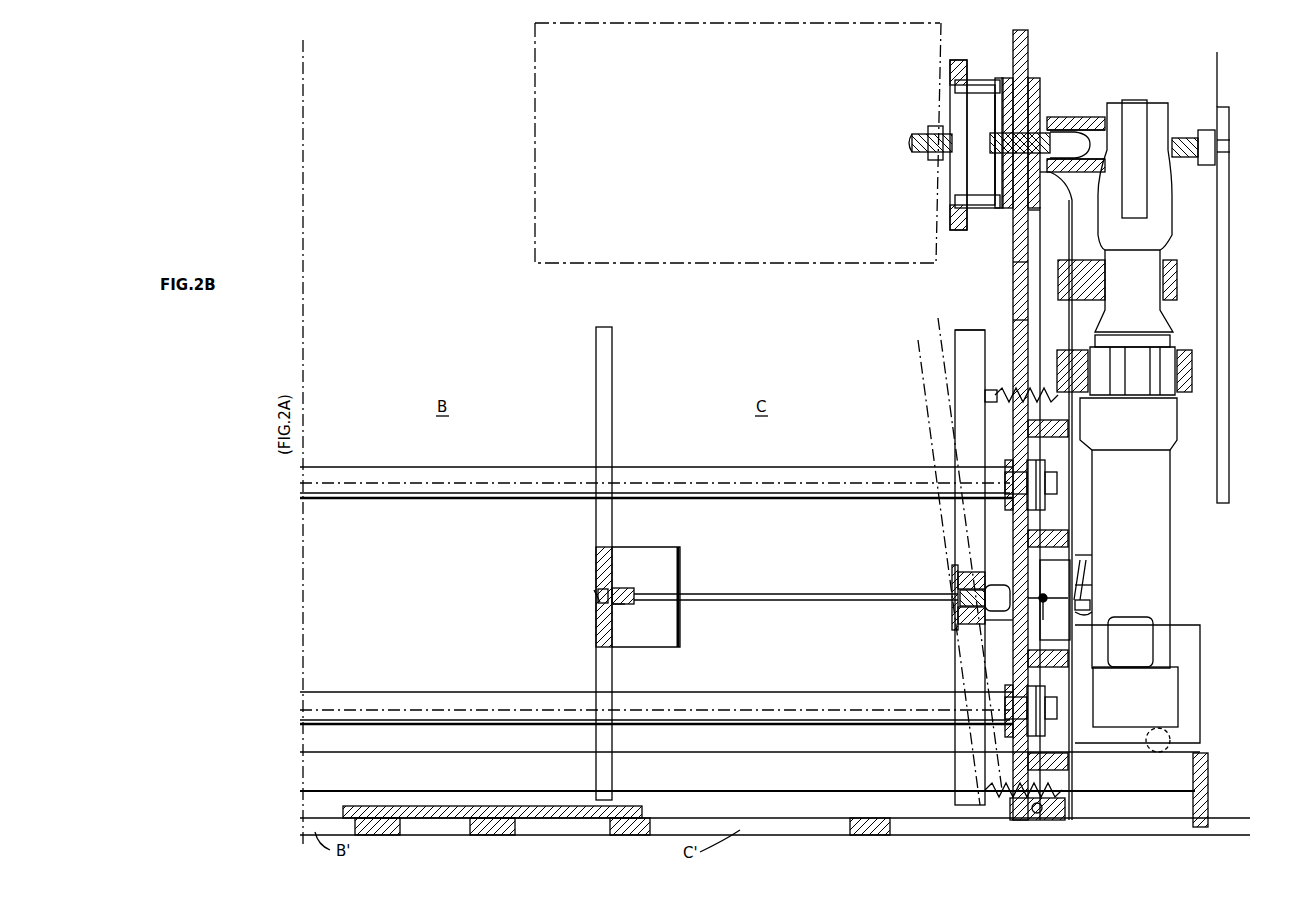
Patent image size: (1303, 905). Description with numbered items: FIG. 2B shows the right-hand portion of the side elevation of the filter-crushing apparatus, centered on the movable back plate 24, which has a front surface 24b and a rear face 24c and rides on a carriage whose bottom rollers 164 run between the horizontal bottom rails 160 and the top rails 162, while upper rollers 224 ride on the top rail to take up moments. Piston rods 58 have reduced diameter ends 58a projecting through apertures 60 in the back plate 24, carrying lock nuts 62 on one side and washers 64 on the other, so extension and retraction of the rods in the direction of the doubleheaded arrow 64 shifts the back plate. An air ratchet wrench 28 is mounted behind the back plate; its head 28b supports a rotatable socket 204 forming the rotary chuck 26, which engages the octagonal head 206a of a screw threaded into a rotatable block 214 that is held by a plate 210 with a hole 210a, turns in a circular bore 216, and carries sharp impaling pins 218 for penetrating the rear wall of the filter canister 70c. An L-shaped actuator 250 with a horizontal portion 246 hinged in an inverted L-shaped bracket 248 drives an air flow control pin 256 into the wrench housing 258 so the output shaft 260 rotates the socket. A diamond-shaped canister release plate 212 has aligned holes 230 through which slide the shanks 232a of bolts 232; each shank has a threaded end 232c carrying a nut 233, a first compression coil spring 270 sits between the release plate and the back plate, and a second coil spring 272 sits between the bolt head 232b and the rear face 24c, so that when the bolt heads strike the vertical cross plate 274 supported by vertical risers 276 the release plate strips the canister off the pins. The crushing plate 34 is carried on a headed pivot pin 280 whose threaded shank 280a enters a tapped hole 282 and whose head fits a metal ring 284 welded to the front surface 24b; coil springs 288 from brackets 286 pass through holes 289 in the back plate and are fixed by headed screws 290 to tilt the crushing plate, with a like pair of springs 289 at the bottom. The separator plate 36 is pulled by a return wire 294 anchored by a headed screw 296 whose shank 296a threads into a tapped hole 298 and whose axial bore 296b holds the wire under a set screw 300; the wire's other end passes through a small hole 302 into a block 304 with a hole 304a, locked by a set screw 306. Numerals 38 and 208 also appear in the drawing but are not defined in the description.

The back plate 24 is at (1028, 35).
The front surface of back plate 24b is at (1030, 290).
The rear face of back plate 24c is at (1015, 266).
The rotary chuck 26 is at (1074, 108).
The air ratchet wrench 28 is at (1150, 232).
The air ratchet wrench head 28b is at (1168, 250).
The crushing plate 34 is at (935, 335).
The separator plate 36 is at (608, 430).
The housing 38 is at (1188, 673).
The piston rods 58 is at (410, 474).
The reduced diameter ends of piston rods 58a is at (1052, 485).
The apertures 60 is at (1005, 505).
The lock nuts 62 is at (1038, 478).
The washers 64 is at (585, 450).
The filter canister 70c is at (535, 75).
The bottom rails 160 is at (1108, 828).
The top rails 162 is at (918, 780).
The bottom rollers 164 is at (1005, 825).
The rotatable socket 204 is at (1100, 117).
The octagonal head 206a is at (1052, 128).
The shaft 208 is at (1000, 160).
The plate 210 is at (1036, 85).
The hole of plate 210a is at (1042, 186).
The canister release plate 212 is at (958, 60).
The rotatable block 214 is at (997, 215).
The circular bore 216 is at (1032, 222).
The impaling pins 218 is at (978, 78).
The upper rollers 224 is at (1162, 752).
The aligned holes 230 is at (937, 108).
The bolts 232 is at (1217, 133).
The bolt shanks 232a is at (1205, 165).
The bolt heads 232b is at (1230, 152).
The threaded end of shank 232c is at (915, 142).
The nut 233 is at (935, 150).
The horizontal portion of actuator 246 is at (1092, 616).
The inverted L-shaped bracket 248 is at (1084, 556).
The L-shaped actuator 250 is at (1090, 565).
The compressed air flow control pin 256 is at (1095, 586).
The housing 258 is at (1168, 630).
The output shaft 260 is at (1135, 146).
The first compression coil spring 270 is at (972, 135).
The second compression coil spring 272 is at (1188, 136).
The vertical cross plate 274 is at (1230, 140).
The vertical risers 276 is at (1230, 206).
The headed pivot pin 280 is at (966, 588).
The threaded shank of pivot pin 280a is at (960, 605).
The tapped hole 282 is at (955, 630).
The metal ring 284 is at (992, 582).
The brackets 286 is at (970, 345).
The coil springs 288 is at (1090, 420).
The springs 289 is at (1030, 390).
The headed screws 290 is at (985, 402).
The separator plate return wire 294 is at (778, 604).
The headed screw 296 is at (635, 588).
The reduced diameter shank 296a is at (598, 594).
The axial bore 296b is at (640, 595).
The tapped hole 298 is at (598, 598).
The set screw 300 is at (628, 606).
The small diameter hole 302 is at (1000, 632).
The metal block 304 is at (1036, 594).
The small diameter hole of block 304a is at (1092, 578).
The set screw 306 is at (1040, 608).